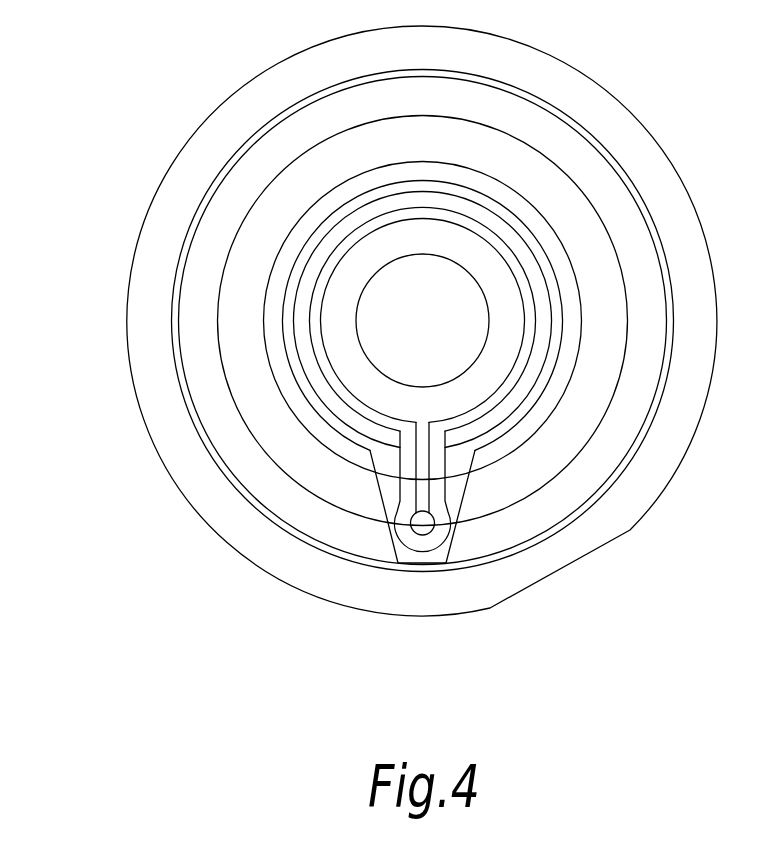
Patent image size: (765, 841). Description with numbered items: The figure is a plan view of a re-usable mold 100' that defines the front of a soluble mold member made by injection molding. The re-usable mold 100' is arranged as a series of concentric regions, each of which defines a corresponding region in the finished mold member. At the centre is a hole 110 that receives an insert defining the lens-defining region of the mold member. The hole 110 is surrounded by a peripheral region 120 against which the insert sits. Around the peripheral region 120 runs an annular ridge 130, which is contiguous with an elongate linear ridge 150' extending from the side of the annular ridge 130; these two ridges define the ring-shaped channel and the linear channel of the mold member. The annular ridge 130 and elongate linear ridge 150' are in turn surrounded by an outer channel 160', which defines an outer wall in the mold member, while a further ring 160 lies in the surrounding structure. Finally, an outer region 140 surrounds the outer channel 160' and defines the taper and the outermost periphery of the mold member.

The re-usable mold 100' is at (422, 308).
The hole 110 is at (438, 333).
The peripheral region 120 is at (342, 315).
The annular ridge 130 is at (330, 377).
The outer region 140 is at (392, 475).
The elongate linear ridge 150' is at (446, 544).
The outer ring 160 is at (334, 281).
The outer channel 160' is at (389, 548).